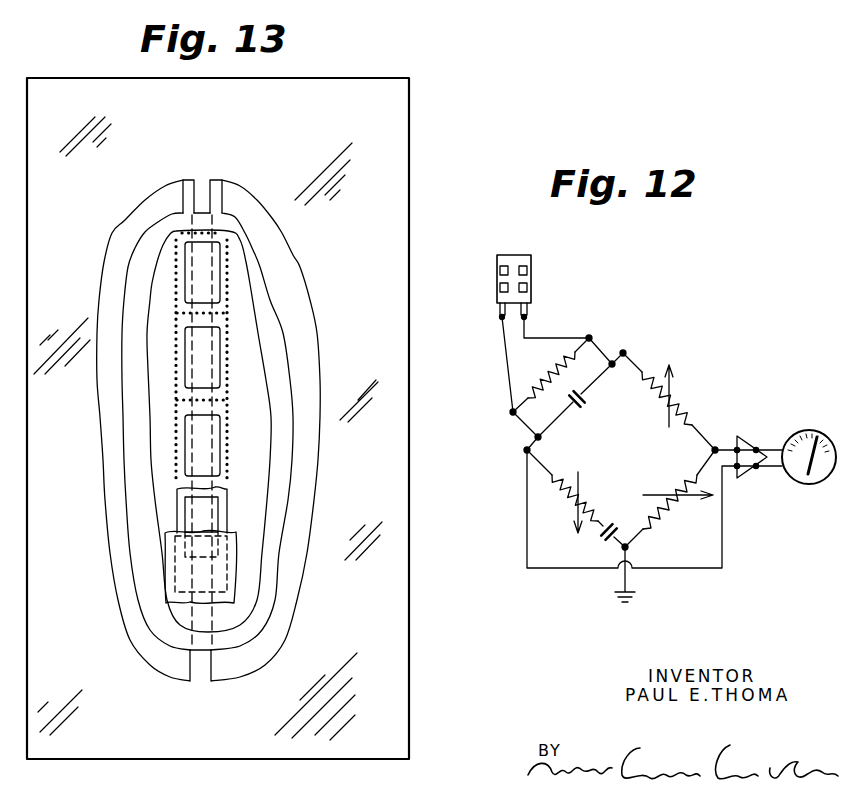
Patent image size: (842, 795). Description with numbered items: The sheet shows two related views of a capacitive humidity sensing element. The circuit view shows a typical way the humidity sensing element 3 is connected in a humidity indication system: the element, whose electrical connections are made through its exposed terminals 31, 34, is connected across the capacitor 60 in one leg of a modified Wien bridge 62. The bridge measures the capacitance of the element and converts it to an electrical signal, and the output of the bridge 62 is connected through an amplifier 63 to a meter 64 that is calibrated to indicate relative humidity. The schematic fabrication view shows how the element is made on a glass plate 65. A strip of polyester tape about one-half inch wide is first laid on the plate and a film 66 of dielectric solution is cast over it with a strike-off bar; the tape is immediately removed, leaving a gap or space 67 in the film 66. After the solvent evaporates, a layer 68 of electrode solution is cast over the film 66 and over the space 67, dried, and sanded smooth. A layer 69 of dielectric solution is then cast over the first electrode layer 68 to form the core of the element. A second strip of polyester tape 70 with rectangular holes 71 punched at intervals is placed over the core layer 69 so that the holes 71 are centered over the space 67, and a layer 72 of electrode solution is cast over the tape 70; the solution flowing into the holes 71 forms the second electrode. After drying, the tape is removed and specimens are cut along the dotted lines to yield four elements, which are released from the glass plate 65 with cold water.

In FIG. 12, the humidity sensing element 3 is at (545, 279).
In FIG. 12, the terminal 31 is at (528, 311).
In FIG. 12, the terminal 34 is at (498, 311).
In FIG. 12, the capacitor 60 is at (592, 400).
In FIG. 12, the modified Wien bridge 62 is at (703, 399).
In FIG. 12, the amplifier 63 is at (745, 440).
In FIG. 12, the meter 64 is at (806, 432).
In FIG. 13, the glass plate 65 is at (397, 112).
In FIG. 13, the film of dielectric solution 66 is at (183, 188).
In FIG. 13, the gap or space 67 is at (207, 182).
In FIG. 13, the layer of electrode solution 68 is at (255, 282).
In FIG. 13, the layer of dielectric solution 69 is at (245, 350).
In FIG. 13, the polyester tape 70 is at (227, 495).
In FIG. 13, the rectangular holes 71 is at (213, 513).
In FIG. 13, the layer of electrode solution 72 is at (208, 260).